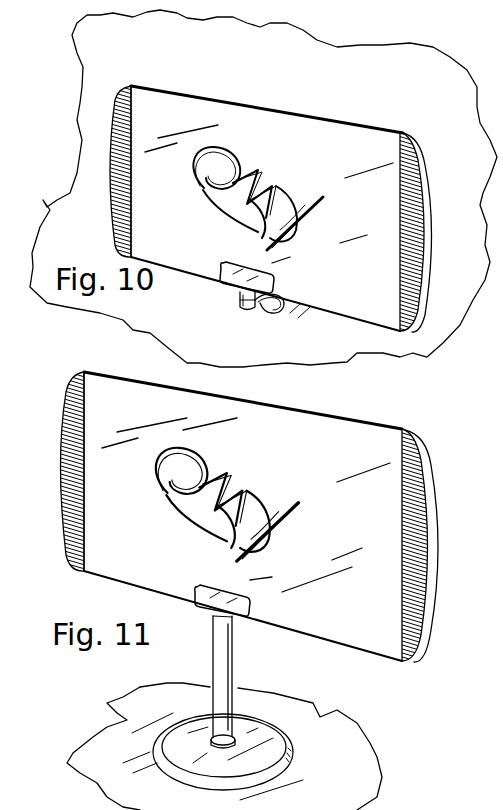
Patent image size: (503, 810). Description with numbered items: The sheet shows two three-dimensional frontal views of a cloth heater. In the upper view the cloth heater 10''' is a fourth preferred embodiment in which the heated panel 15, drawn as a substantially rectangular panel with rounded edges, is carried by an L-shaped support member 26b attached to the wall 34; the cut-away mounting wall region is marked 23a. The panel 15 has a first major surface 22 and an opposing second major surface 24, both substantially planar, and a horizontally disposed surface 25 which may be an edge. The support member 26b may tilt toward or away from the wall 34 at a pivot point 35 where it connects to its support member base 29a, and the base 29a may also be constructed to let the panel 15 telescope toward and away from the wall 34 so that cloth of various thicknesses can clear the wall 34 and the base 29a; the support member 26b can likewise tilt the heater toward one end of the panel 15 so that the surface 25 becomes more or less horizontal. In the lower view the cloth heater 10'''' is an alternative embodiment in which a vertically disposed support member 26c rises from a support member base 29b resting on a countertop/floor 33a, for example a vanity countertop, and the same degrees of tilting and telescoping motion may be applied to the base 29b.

In FIG. 10, the cloth heater 10''' is at (269, 214).
In FIG. 11, the cloth heater 10'''' is at (239, 567).
In FIG. 10, the heated panel 15 is at (228, 100).
In FIG. 10, the first major surface 22 is at (352, 301).
In FIG. 10, the wall surface 23a is at (248, 188).
In FIG. 10, the second major surface 24 is at (380, 141).
In FIG. 10, the horizontally disposed surface 25 is at (278, 112).
In FIG. 10, the support member 26b is at (240, 302).
In FIG. 11, the support member 26c is at (233, 672).
In FIG. 10, the support member base 29a is at (268, 313).
In FIG. 11, the support member base 29b is at (273, 741).
In FIG. 11, the countertop/floor 33a is at (355, 780).
In FIG. 10, the wall 34 is at (297, 318).
In FIG. 10, the pivot point 35 is at (245, 314).